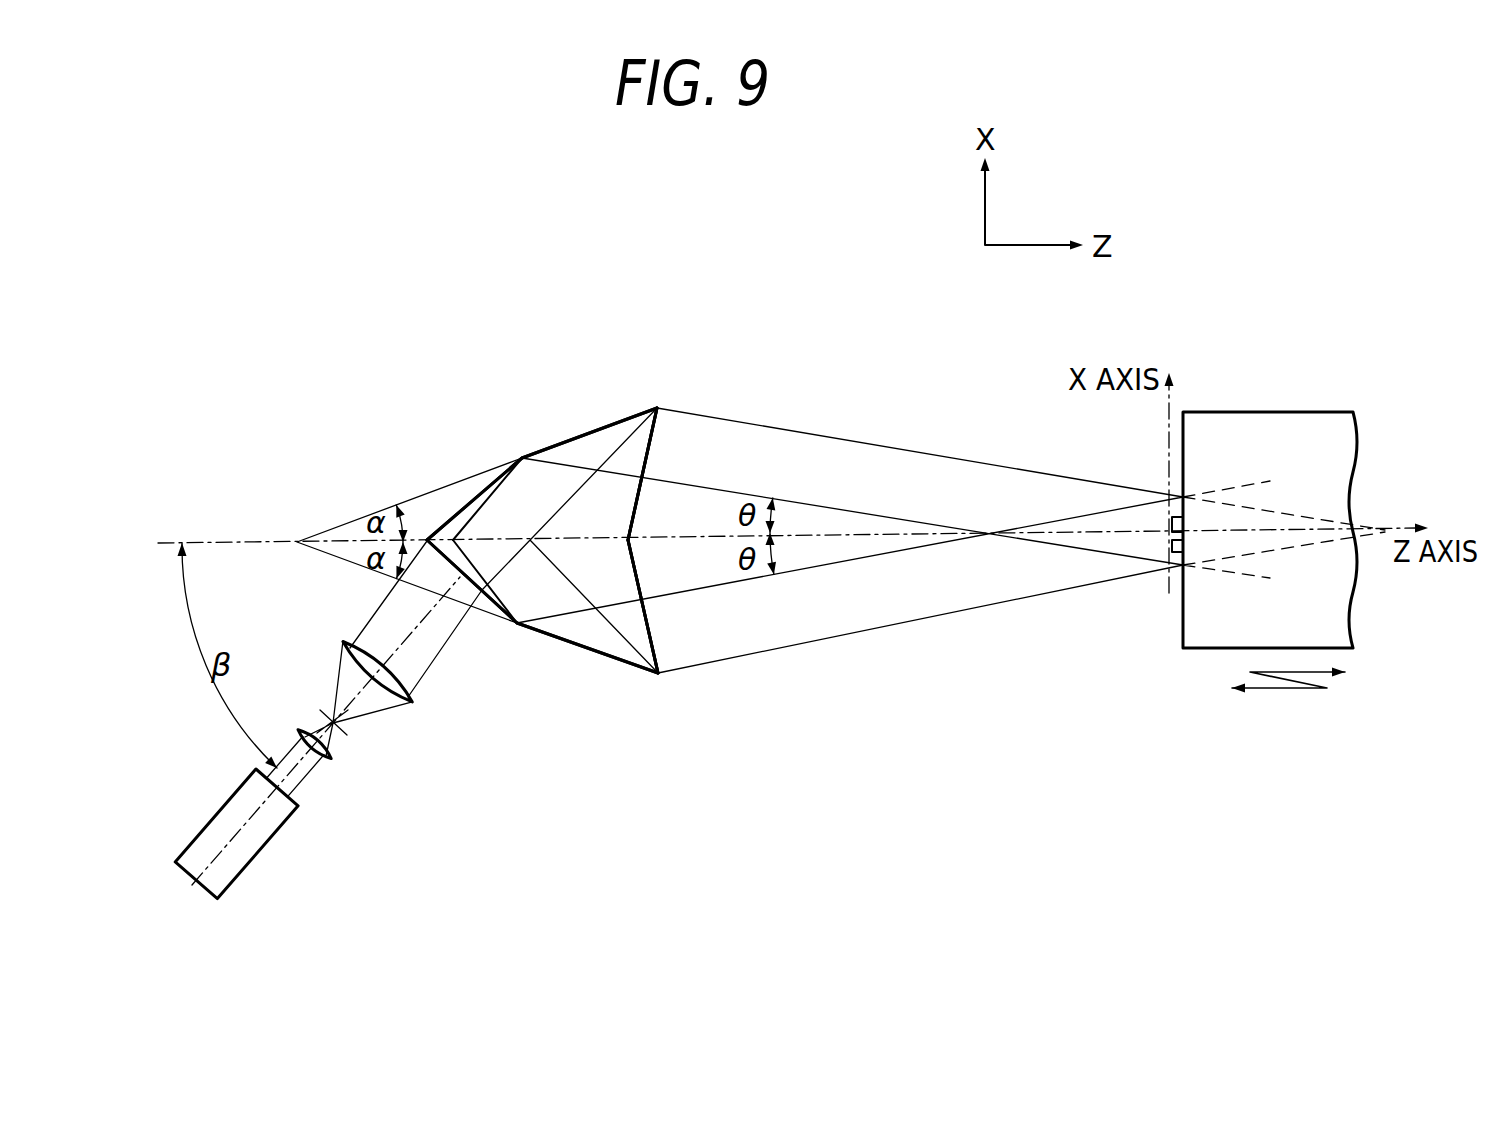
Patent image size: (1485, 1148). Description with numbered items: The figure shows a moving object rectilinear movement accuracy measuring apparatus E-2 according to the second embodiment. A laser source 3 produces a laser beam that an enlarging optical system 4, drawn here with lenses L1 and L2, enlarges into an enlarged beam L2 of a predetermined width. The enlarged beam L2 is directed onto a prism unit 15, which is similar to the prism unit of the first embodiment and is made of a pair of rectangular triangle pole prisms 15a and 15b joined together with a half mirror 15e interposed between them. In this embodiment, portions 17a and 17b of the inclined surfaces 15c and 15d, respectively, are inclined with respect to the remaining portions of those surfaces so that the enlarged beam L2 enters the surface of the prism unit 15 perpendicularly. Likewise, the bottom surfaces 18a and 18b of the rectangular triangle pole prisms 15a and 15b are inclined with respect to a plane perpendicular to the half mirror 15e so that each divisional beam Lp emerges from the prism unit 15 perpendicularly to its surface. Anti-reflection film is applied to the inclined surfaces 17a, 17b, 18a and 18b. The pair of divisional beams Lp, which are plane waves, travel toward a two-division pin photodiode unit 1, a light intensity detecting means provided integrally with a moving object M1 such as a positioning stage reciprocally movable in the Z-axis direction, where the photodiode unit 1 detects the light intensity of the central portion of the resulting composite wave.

The two-division pin photodiode unit 1 is at (1192, 512).
The laser source 3 is at (272, 840).
The enlarging optical system 4 is at (433, 723).
The prism unit 15 is at (480, 452).
The rectangular triangle pole prism 15a is at (528, 480).
The rectangular triangle pole prism 15b is at (598, 648).
The inclined surface 15c is at (574, 435).
The inclined surface 15d is at (566, 630).
The half mirror 15e is at (590, 538).
The inclined portion of inclined surface 17a is at (463, 500).
The inclined portion of inclined surface 17b is at (463, 575).
The bottom surface 18a is at (650, 420).
The bottom surface 18b is at (650, 626).
The first lens L1 is at (303, 773).
The enlarged beam L2 is at (393, 622).
The divisional beams Lp is at (933, 477).
The moving object M1 is at (1205, 623).
The moving object rectilinear movement accuracy measuring apparatus E-2 is at (311, 358).